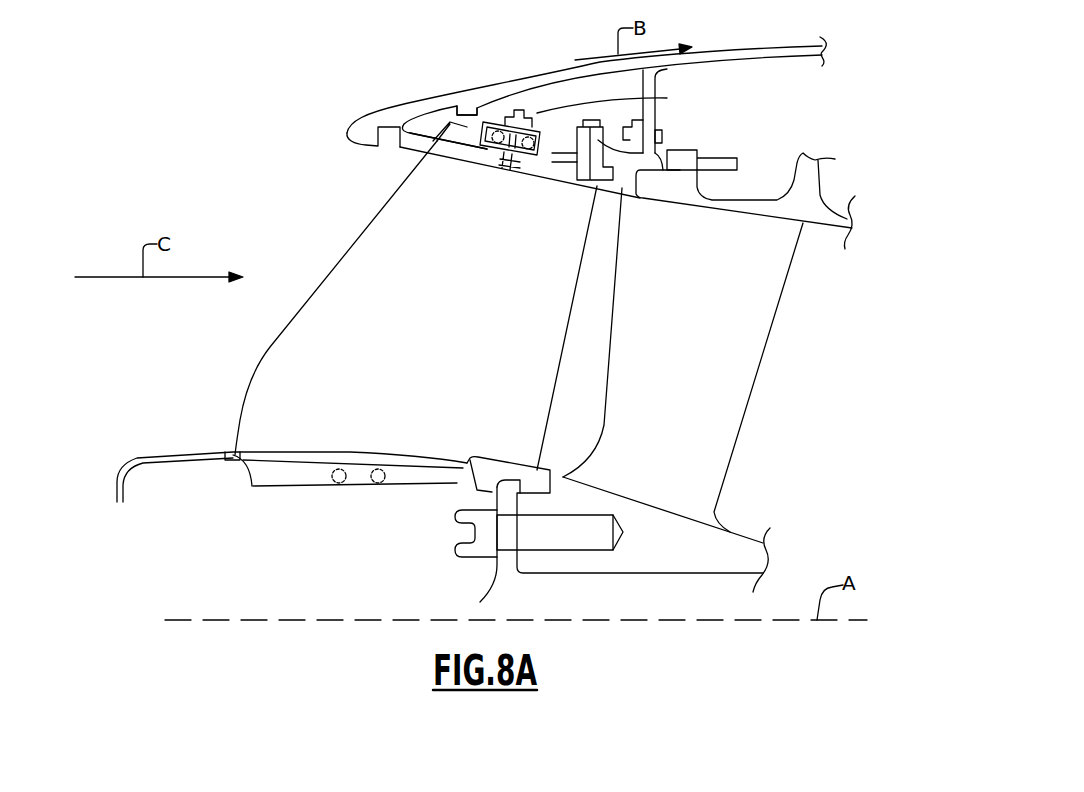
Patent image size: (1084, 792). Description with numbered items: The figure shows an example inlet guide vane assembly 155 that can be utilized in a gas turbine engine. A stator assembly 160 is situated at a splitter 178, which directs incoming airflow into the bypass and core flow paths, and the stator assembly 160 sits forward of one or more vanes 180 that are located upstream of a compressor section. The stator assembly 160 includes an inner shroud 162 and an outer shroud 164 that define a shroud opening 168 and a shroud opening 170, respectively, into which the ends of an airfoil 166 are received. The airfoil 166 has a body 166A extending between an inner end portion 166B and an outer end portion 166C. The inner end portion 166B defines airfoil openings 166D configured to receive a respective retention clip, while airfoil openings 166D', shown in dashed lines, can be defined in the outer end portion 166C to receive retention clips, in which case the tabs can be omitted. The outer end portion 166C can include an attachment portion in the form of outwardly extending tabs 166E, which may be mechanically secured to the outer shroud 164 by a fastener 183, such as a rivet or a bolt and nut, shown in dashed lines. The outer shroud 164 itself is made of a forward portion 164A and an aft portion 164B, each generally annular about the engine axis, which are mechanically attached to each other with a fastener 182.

The inlet guide vane assembly 155 is at (240, 114).
The splitter 178 is at (400, 107).
The outer shroud 164 is at (403, 150).
The forward portion 164A is at (493, 128).
The aft portion 164B is at (622, 190).
The airfoil 166 is at (350, 240).
The airfoil 166A is at (466, 316).
The inner end portion 166B is at (256, 475).
The outer end portion 166C is at (463, 126).
The airfoil openings 166D is at (329, 505).
The airfoil openings 166D' is at (484, 199).
The tabs 166E is at (667, 98).
The stator assembly 160 is at (521, 109).
The fastener 183 is at (534, 112).
The fastener 182 is at (653, 147).
The shroud opening 170 is at (434, 144).
The shroud opening 168 is at (243, 470).
The inner shroud 162 is at (252, 450).
The vane 180 is at (753, 403).